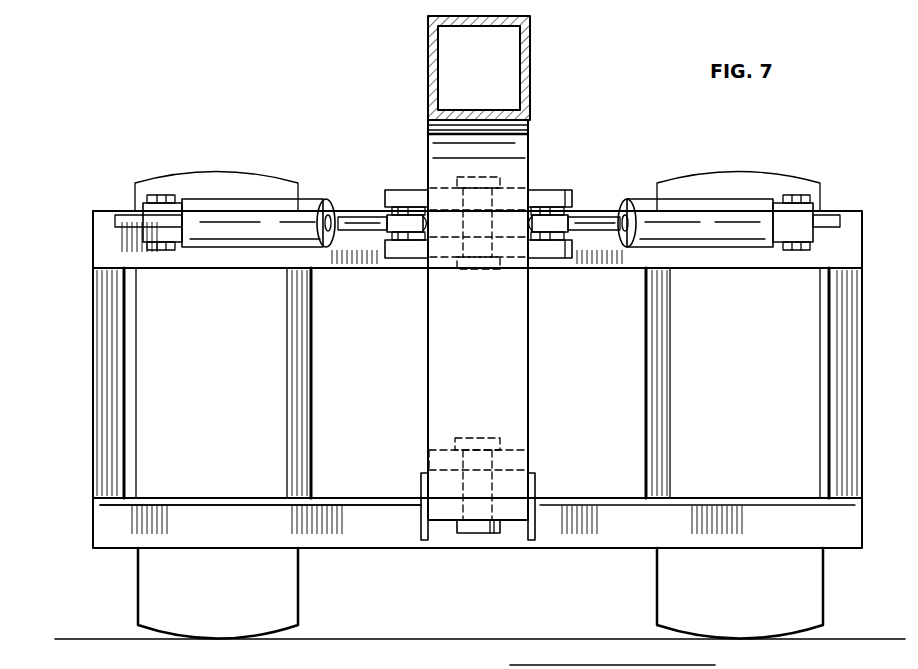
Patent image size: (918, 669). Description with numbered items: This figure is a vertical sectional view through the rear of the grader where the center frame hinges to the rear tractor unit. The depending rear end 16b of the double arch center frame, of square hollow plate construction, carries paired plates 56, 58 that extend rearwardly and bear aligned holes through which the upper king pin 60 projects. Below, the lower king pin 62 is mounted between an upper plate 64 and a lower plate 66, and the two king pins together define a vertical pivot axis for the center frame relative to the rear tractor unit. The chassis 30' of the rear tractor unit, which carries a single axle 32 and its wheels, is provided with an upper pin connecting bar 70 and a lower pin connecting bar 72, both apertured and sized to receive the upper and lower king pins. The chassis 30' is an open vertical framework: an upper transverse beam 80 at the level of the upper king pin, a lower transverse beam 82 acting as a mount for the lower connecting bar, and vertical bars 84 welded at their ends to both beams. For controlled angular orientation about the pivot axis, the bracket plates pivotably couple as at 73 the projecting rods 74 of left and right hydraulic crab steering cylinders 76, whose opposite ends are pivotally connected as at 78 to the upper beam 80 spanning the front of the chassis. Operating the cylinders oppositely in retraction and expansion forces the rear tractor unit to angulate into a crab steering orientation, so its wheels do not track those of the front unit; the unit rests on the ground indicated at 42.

The rear end 16b is at (521, 388).
The chassis 30' is at (499, 400).
The axle 32 is at (285, 600).
The ground surface 42 is at (430, 666).
The plate 56 is at (538, 195).
The plate 58 is at (555, 250).
The upper king pin 60 is at (470, 177).
The lower king pin 62 is at (478, 436).
The upper plate 64 is at (510, 460).
The lower plate 66 is at (510, 522).
The upper pin connecting bar 70 is at (560, 215).
The lower pin connecting bar 72 is at (538, 483).
The pivotable coupling 73 is at (400, 212).
The projecting rod 74 is at (385, 250).
The hydraulic crab steering cylinder 76 is at (250, 200).
The pivotal connection 78 is at (160, 196).
The upper transverse beam 80 is at (700, 262).
The lower transverse beam 82 is at (240, 540).
The vertical bar 84 is at (120, 448).